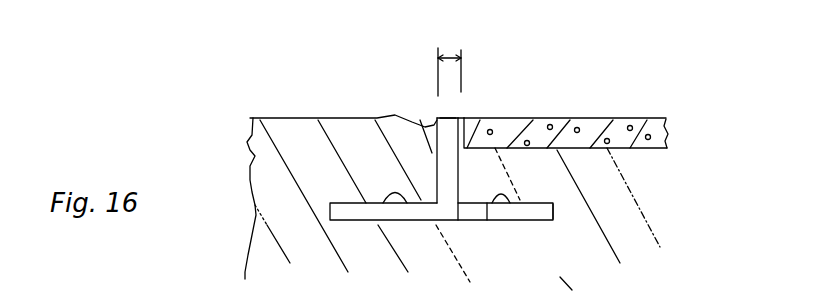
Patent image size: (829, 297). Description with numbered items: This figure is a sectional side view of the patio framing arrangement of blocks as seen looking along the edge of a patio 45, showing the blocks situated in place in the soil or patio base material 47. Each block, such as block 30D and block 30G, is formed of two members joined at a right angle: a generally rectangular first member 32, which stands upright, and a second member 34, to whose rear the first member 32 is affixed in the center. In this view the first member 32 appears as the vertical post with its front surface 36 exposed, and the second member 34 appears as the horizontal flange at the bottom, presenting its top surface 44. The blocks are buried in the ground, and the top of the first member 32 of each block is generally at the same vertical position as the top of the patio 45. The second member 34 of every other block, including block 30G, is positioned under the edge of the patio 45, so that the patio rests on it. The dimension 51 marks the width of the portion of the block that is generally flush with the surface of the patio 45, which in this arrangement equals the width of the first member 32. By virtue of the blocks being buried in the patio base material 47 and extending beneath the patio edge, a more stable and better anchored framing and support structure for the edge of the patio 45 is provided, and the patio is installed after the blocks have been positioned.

The soil or patio base material 47 is at (287, 137).
The front surface 36 is at (435, 150).
The second member 34 is at (343, 198).
The top surface 44 is at (383, 203).
The patio 45 is at (622, 120).
The dimension 51 is at (452, 50).
The block 30D is at (450, 114).
The first member 32 is at (460, 116).
The block 30G is at (560, 210).